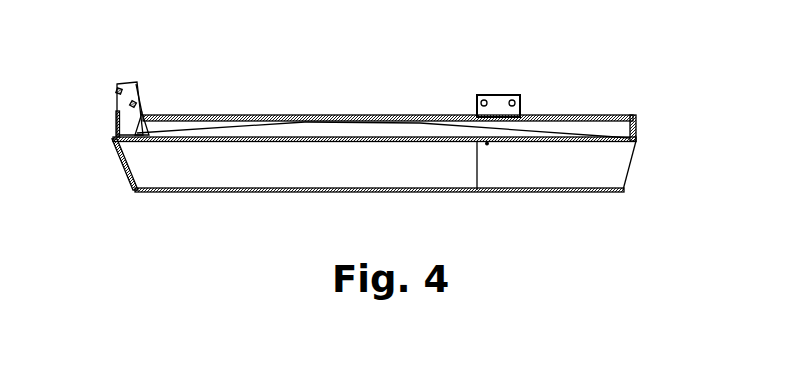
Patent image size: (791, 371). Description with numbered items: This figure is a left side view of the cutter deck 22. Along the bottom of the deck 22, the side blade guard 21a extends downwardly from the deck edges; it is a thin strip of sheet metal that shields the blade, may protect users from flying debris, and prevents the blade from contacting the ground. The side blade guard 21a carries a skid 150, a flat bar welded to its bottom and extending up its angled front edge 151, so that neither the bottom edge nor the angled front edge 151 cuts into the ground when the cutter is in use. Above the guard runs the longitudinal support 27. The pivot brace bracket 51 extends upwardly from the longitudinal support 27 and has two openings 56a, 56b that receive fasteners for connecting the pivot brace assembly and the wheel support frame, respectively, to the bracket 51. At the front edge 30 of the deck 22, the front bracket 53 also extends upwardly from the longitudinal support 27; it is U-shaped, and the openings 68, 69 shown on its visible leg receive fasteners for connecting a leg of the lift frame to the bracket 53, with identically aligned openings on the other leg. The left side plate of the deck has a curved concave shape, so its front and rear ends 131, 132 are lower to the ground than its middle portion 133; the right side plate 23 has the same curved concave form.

The deck 22 is at (616, 65).
The front bracket 53 is at (116, 85).
The opening 68 is at (120, 87).
The opening 69 is at (135, 101).
The front end of left side plate 131 is at (143, 113).
The longitudinal support 27 is at (200, 127).
The right side plate 23 is at (326, 132).
The middle portion of left side plate 133 is at (367, 116).
The rear end of left side plate 132 is at (613, 135).
The pivot brace bracket 51 is at (487, 95).
The opening 56a is at (480, 99).
The opening 56b is at (509, 99).
The front edge of deck 30 is at (116, 127).
The angled front edge 151 is at (124, 172).
The skid 150 is at (280, 191).
The side blade guard 21a is at (376, 173).